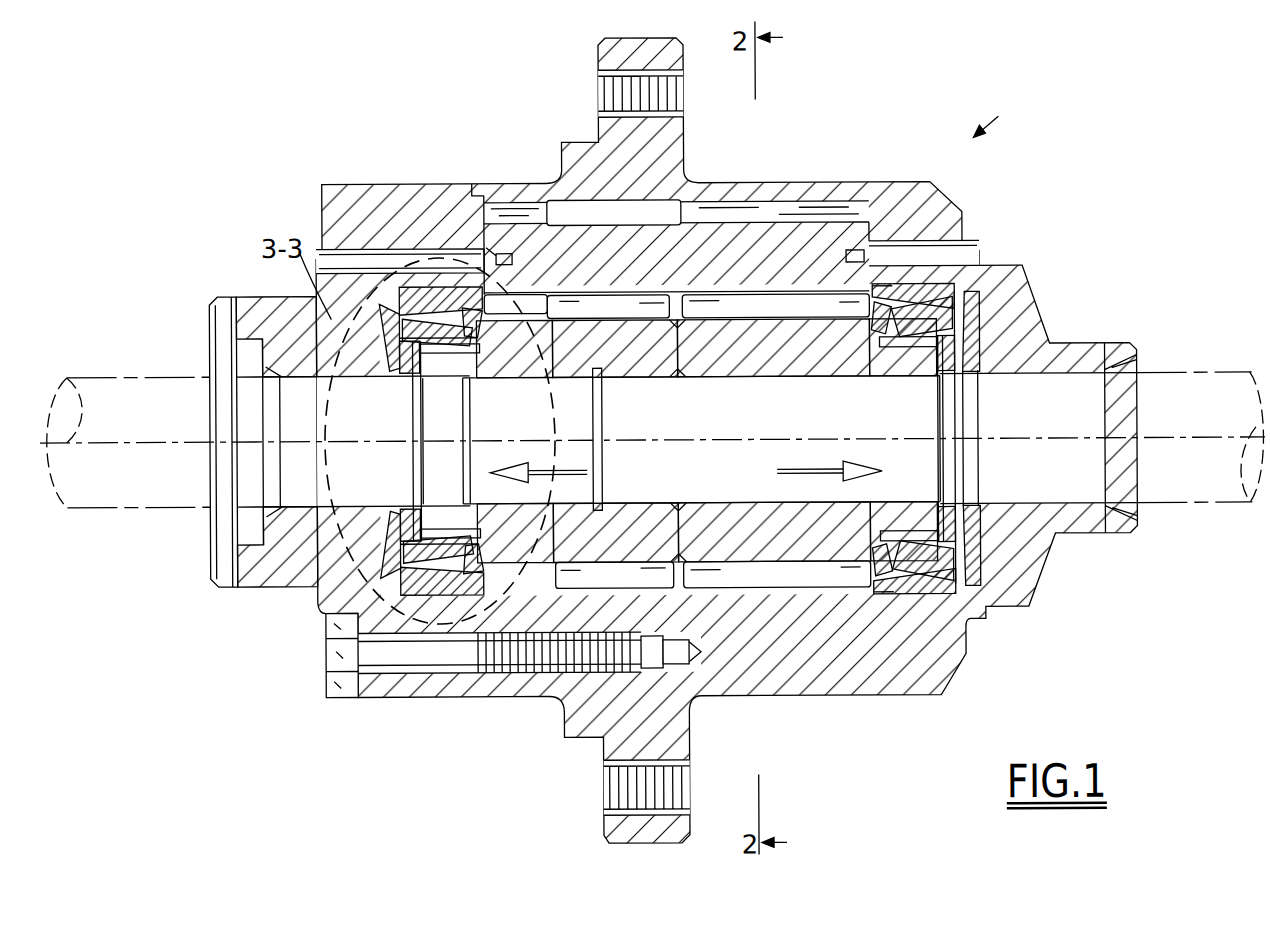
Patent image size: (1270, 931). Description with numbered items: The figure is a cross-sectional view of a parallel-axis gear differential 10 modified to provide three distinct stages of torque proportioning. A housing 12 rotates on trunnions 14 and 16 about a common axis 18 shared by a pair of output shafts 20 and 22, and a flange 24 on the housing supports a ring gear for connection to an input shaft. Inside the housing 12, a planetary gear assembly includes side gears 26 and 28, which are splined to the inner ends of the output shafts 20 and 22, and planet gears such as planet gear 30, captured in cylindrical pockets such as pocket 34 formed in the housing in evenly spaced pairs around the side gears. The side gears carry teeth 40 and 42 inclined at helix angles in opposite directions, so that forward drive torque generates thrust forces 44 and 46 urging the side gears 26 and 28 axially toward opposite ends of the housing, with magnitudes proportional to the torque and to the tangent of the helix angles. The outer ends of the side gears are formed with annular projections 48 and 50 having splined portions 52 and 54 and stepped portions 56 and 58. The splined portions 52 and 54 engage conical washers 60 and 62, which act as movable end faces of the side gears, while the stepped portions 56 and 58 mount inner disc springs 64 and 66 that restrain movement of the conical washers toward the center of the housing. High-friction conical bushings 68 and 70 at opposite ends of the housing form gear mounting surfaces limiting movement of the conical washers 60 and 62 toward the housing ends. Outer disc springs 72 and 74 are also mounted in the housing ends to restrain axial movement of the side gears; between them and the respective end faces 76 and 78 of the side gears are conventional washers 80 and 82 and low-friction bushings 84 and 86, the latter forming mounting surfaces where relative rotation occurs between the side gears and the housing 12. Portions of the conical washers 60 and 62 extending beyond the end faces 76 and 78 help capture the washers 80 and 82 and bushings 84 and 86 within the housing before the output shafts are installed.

The parallel-axis gear differential 10 is at (1040, 127).
The housing 12 is at (862, 697).
The trunnion 14 is at (262, 296).
The trunnion 16 is at (1085, 345).
The common axis 18 is at (140, 440).
The output shaft 20 is at (128, 505).
The output shaft 22 is at (1190, 505).
The flange 24 is at (600, 68).
The side gear 26 is at (660, 515).
The side gear 28 is at (718, 512).
The planet gear 30 is at (795, 223).
The cylindrical pocket 34 is at (738, 208).
The teeth 40 is at (582, 580).
The teeth 42 is at (722, 580).
The thrust force 44 is at (538, 470).
The thrust force 46 is at (823, 466).
The annular projection 48 is at (435, 350).
The annular projection 50 is at (907, 522).
The splined portion 52 is at (450, 345).
The splined portion 54 is at (915, 325).
The stepped portion 56 is at (515, 385).
The stepped portion 58 is at (880, 335).
The conical washer 60 is at (465, 508).
The conical washer 62 is at (907, 335).
The inner disc spring 64 is at (468, 360).
The inner disc spring 66 is at (882, 566).
The high-friction conical bushing 68 is at (437, 595).
The high-friction conical bushing 70 is at (927, 590).
The outer disc spring 72 is at (405, 412).
The outer disc spring 74 is at (972, 458).
The end face 76 is at (418, 370).
The end face 78 is at (968, 503).
The conventional washer 80 is at (405, 452).
The conventional washer 82 is at (953, 420).
The low-friction bushing 84 is at (405, 478).
The low-friction bushing 86 is at (947, 392).